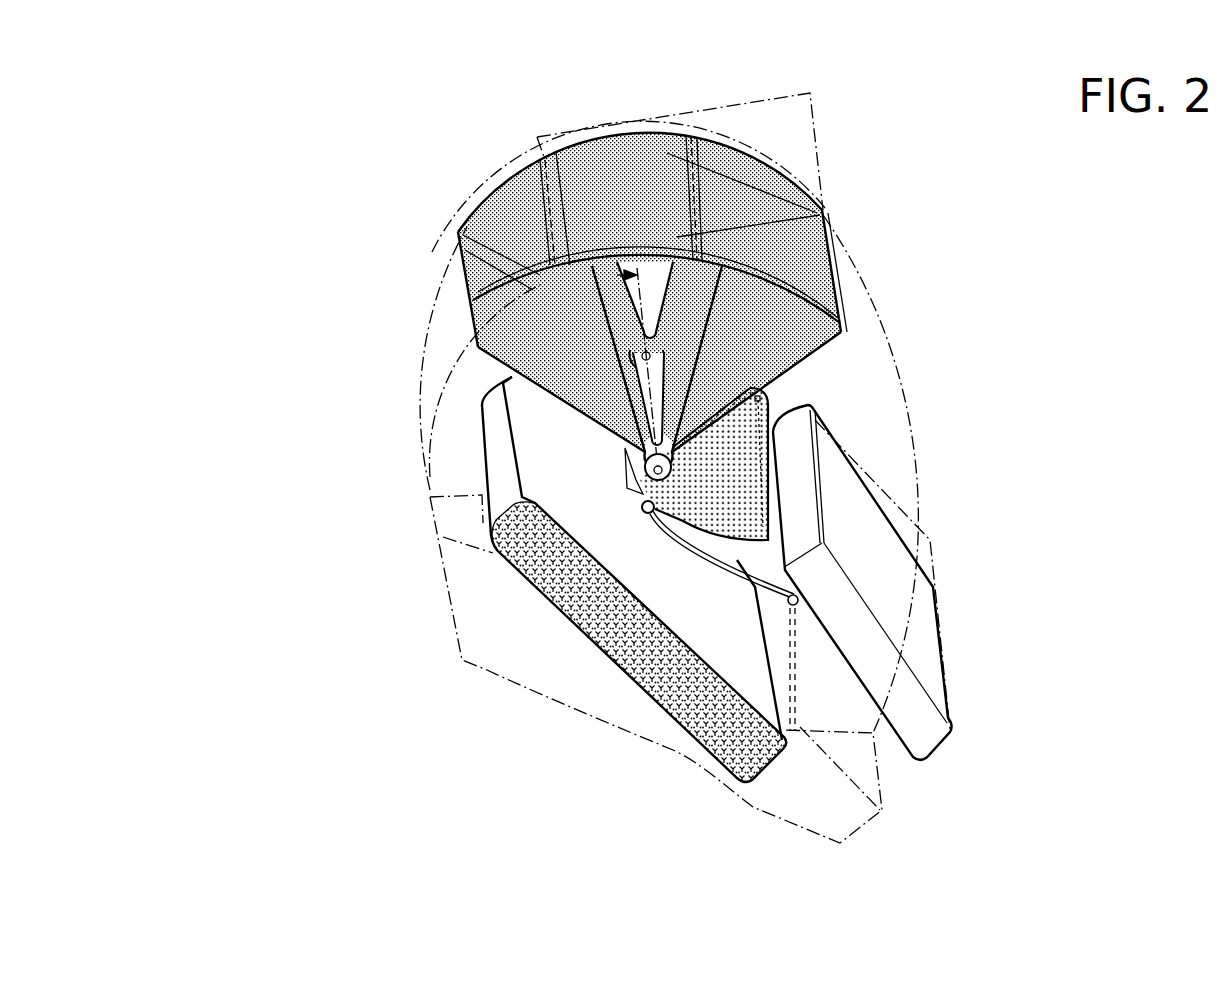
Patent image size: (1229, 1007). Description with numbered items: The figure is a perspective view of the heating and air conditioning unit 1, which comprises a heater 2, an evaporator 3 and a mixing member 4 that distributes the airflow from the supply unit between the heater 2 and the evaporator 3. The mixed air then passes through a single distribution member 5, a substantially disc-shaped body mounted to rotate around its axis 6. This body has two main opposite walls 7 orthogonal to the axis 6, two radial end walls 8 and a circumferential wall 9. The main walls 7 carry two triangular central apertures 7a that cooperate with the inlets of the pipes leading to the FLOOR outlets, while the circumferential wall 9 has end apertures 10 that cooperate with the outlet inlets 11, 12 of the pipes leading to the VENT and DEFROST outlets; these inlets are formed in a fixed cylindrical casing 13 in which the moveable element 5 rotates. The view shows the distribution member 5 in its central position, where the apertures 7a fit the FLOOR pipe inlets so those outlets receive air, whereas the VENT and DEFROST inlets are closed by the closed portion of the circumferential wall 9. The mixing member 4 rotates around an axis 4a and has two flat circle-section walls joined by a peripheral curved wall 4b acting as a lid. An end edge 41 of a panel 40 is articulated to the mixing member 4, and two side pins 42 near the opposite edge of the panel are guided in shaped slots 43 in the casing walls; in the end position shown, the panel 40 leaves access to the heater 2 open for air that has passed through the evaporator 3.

The heating and air conditioning unit 1 is at (305, 172).
The heater 2 is at (912, 617).
The evaporator 3 is at (630, 665).
The mixing member 4 is at (745, 494).
The axis 4a is at (773, 458).
The peripheral curved wall 4b is at (738, 548).
The single distribution member 5 is at (804, 368).
The axis 6 is at (488, 304).
The main opposite walls 7 is at (846, 345).
The triangular central apertures 7a is at (652, 275).
The radial end walls 8 is at (478, 262).
The circumferential wall 9 is at (615, 175).
The end apertures 10 is at (505, 238).
The outlet inlet 11 is at (575, 143).
The outlet inlet 12 is at (728, 160).
The fixed cylindrical casing 13 is at (440, 301).
The panel 40 is at (716, 563).
The end edge 41 is at (648, 514).
The side pins 42 is at (798, 600).
The shaped slots 43 is at (798, 648).